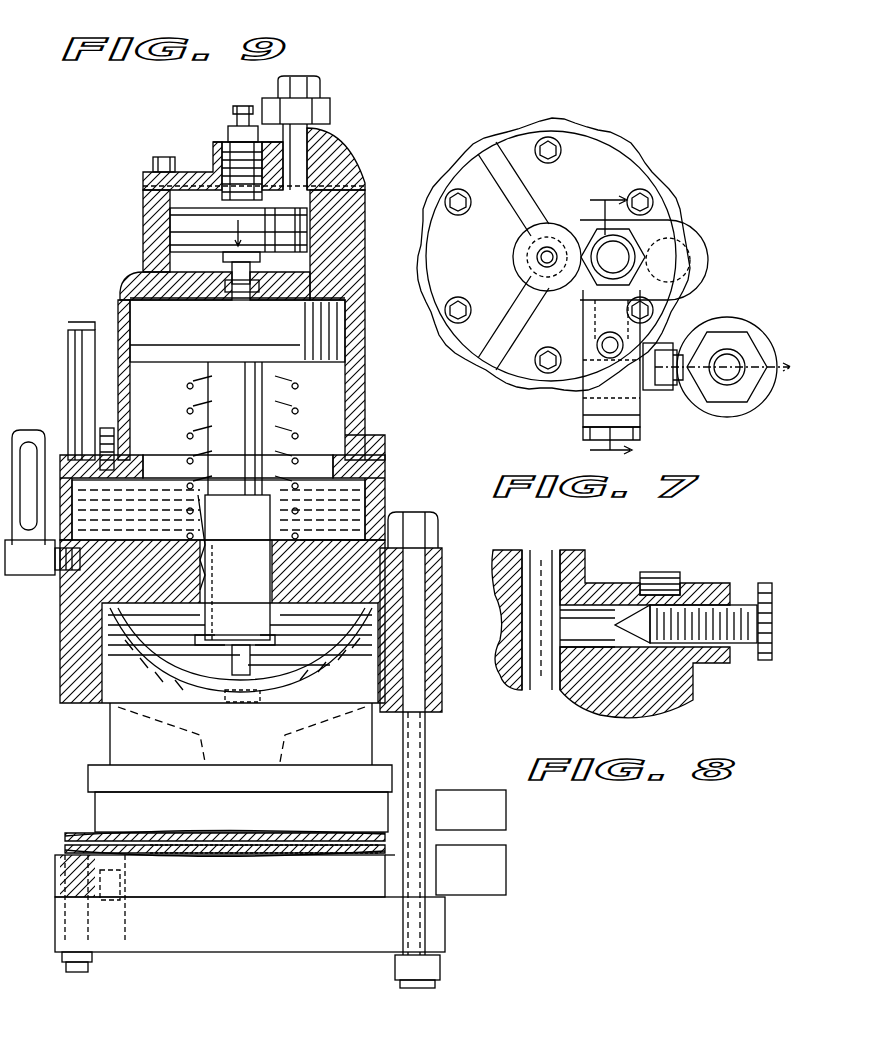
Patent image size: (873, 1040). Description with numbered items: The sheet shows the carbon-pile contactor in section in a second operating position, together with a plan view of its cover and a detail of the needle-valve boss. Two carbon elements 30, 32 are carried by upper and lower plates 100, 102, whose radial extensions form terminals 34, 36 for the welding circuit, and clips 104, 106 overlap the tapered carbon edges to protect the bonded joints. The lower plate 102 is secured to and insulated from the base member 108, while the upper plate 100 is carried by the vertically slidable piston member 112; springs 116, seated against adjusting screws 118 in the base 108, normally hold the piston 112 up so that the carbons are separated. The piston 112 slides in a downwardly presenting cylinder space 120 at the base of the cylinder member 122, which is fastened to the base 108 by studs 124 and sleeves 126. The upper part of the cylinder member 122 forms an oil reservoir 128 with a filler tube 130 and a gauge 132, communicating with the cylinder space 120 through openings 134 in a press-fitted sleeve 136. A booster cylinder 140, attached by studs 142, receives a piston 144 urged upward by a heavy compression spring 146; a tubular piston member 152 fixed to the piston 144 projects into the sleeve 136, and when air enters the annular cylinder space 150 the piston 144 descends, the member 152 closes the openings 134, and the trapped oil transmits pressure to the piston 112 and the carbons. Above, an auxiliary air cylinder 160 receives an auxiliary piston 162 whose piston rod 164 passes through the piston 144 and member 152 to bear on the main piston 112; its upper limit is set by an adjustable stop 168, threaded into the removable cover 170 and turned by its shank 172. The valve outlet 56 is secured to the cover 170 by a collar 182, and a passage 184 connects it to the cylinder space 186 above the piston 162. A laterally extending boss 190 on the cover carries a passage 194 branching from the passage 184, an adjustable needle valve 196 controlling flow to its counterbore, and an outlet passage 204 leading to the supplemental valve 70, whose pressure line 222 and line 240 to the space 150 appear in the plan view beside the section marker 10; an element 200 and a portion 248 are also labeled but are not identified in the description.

In FIG. 9, the outlet 56 is at (322, 90).
In FIG. 9, the collar 182 is at (332, 112).
In FIG. 9, the passage 184 is at (307, 140).
In FIG. 8, the passage 184 is at (530, 595).
In FIG. 9, the shank 172 is at (242, 125).
In FIG. 7, the shank 172 is at (535, 259).
In FIG. 9, the adjustable stop member 168 is at (222, 165).
In FIG. 9, the removable cover 170 is at (143, 180).
In FIG. 7, the removable cover 170 is at (605, 158).
In FIG. 8, the removable cover 170 is at (498, 640).
In FIG. 9, the cylinder space 186 is at (170, 212).
In FIG. 9, the auxiliary air cylinder 160 is at (175, 232).
In FIG. 9, the auxiliary piston 162 is at (175, 245).
In FIG. 9, the piston rod 164 is at (250, 272).
In FIG. 9, the annular cylinder space 150 is at (125, 300).
In FIG. 9, the booster cylinder 140 is at (118, 320).
In FIG. 9, the piston 144 is at (232, 358).
In FIG. 9, the filler tube 130 is at (78, 373).
In FIG. 9, the studs 142 is at (105, 428).
In FIG. 9, the compression spring 146 is at (298, 385).
In FIG. 9, the tubular piston member 152 is at (265, 425).
In FIG. 9, the reservoir 128 is at (345, 495).
In FIG. 9, the openings 134 is at (305, 524).
In FIG. 9, the gauge 132 is at (12, 572).
In FIG. 9, the sleeve 136 is at (255, 592).
In FIG. 9, the cylinder space 120 is at (330, 608).
In FIG. 9, the cylinder member 122 is at (437, 542).
In FIG. 9, the studs 124 is at (415, 567).
In FIG. 9, the piston member 112 is at (345, 694).
In FIG. 9, the sleeves 126 is at (425, 628).
In FIG. 9, the plate 100 is at (380, 782).
In FIG. 9, the clips 104 is at (395, 806).
In FIG. 9, the terminal 34 is at (506, 812).
In FIG. 9, the springs 116 is at (65, 842).
In FIG. 9, the plate 102 is at (185, 884).
In FIG. 9, the carbon element 32 is at (225, 868).
In FIG. 9, the carbon element 30 is at (297, 866).
In FIG. 9, the clips 106 is at (395, 856).
In FIG. 9, the terminal 36 is at (506, 860).
In FIG. 9, the base member 108 is at (262, 930).
In FIG. 9, the adjusting screws 118 is at (66, 968).
In FIG. 7, the lobe 248 is at (672, 236).
In FIG. 7, the boss 190 is at (585, 320).
In FIG. 8, the boss 190 is at (600, 578).
In FIG. 7, the outlet passage 204 is at (602, 370).
In FIG. 8, the outlet passage 204 is at (662, 572).
In FIG. 7, the knob 200 is at (583, 432).
In FIG. 8, the knob 200 is at (757, 652).
In FIG. 7, the supplemental valve 70 is at (733, 320).
In FIG. 7, the electrode 10 is at (690, 311).
In FIG. 7, the line 240 is at (668, 394).
In FIG. 7, the line 222 is at (737, 405).
In FIG. 8, the adjustable needle valve 196 is at (682, 612).
In FIG. 8, the passage 194 is at (608, 706).